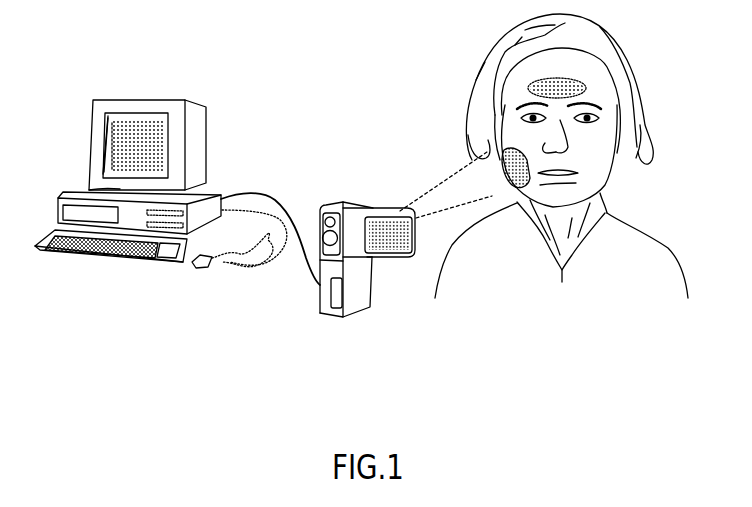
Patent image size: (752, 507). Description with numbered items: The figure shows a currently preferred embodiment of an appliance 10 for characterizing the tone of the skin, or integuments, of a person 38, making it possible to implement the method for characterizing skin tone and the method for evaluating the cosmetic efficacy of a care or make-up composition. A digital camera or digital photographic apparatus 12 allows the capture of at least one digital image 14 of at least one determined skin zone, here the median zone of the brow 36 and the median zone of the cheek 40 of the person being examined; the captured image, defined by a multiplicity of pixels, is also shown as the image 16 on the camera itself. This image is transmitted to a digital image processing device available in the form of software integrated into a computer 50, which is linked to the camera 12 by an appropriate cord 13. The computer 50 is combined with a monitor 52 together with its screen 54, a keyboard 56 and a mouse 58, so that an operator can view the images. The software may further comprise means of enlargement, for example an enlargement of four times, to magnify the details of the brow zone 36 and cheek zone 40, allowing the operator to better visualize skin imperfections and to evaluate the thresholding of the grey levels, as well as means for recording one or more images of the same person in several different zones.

The appliance 10 is at (272, 72).
The digital camera 12 is at (351, 198).
The cord 13 is at (263, 194).
The digital image 14 is at (112, 153).
The displayed image 16 is at (112, 140).
The median zone of the brow 36 is at (564, 70).
The subject 38 is at (561, 245).
The median zone of the cheek 40 is at (500, 152).
The computer 50 is at (220, 191).
The monitor 52 is at (204, 107).
The screen 54 is at (137, 120).
The keyboard 56 is at (73, 253).
The mouse 58 is at (218, 266).